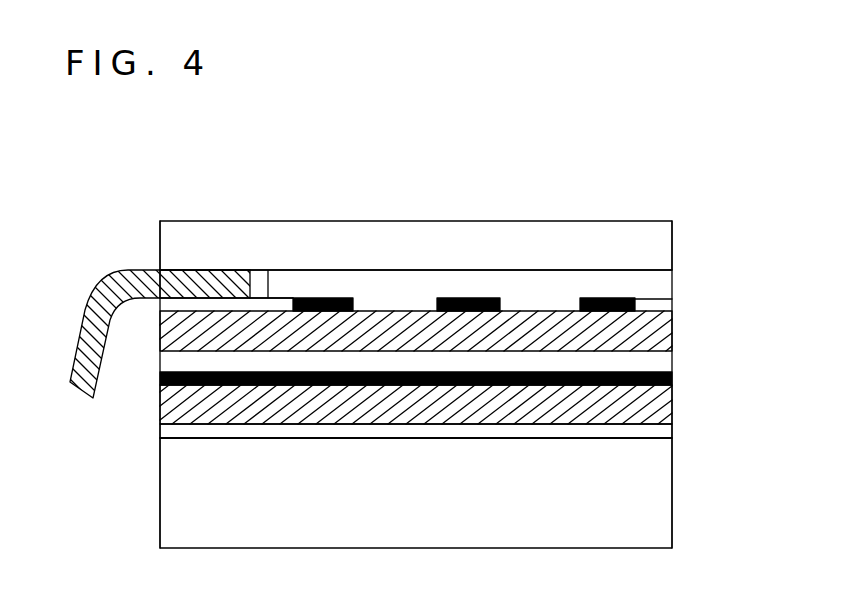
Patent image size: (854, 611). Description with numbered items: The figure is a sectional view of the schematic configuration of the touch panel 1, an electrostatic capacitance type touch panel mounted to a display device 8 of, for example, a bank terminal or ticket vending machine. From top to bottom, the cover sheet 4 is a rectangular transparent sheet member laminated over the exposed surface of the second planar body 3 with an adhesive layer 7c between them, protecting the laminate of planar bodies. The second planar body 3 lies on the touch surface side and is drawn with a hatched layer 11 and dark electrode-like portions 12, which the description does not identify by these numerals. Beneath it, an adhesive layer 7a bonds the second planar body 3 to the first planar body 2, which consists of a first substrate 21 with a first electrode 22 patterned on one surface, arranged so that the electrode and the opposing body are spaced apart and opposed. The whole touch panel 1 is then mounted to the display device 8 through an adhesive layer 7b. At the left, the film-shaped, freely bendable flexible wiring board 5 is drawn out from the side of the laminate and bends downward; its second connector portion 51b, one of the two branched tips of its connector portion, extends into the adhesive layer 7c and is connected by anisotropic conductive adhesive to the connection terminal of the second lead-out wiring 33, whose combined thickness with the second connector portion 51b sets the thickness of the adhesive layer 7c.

The touch panel 1 is at (135, 202).
The cover sheet 4 is at (158, 253).
The adhesive layer 7c is at (674, 280).
The flexible wiring board 5 is at (73, 338).
The second connector portion 51b is at (213, 277).
The second lead-out wiring 33 is at (160, 308).
The second planar body 3 is at (738, 285).
The electrodes 12 is at (675, 302).
The touch panel substrate 11 is at (669, 334).
The adhesive layer 7a is at (675, 365).
The first planar body 2 is at (760, 393).
The first electrode 22 is at (676, 383).
The first substrate 21 is at (675, 413).
The adhesive layer 7b is at (675, 433).
The display device 8 is at (675, 500).